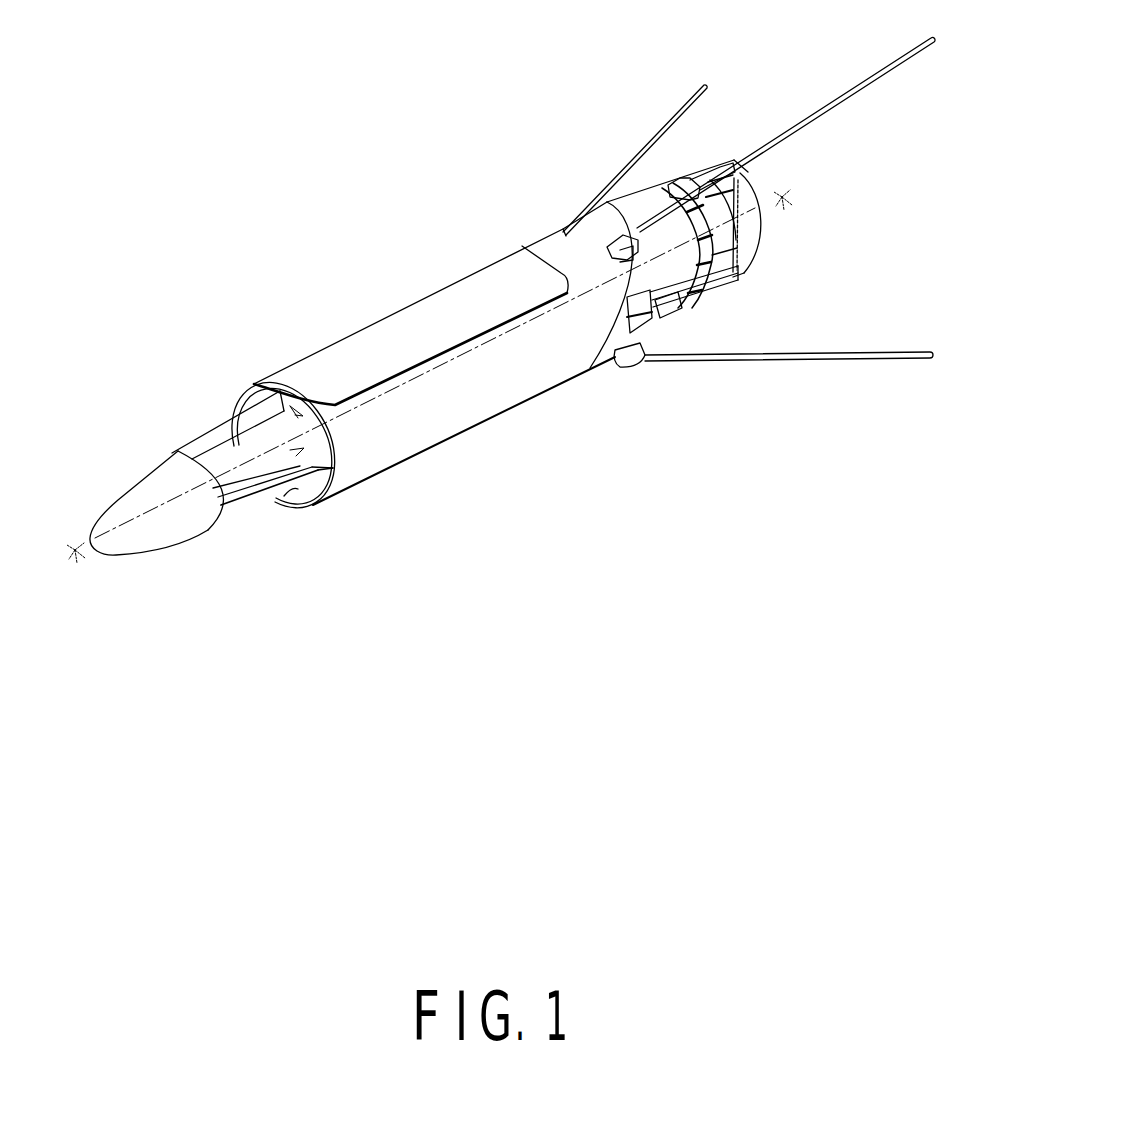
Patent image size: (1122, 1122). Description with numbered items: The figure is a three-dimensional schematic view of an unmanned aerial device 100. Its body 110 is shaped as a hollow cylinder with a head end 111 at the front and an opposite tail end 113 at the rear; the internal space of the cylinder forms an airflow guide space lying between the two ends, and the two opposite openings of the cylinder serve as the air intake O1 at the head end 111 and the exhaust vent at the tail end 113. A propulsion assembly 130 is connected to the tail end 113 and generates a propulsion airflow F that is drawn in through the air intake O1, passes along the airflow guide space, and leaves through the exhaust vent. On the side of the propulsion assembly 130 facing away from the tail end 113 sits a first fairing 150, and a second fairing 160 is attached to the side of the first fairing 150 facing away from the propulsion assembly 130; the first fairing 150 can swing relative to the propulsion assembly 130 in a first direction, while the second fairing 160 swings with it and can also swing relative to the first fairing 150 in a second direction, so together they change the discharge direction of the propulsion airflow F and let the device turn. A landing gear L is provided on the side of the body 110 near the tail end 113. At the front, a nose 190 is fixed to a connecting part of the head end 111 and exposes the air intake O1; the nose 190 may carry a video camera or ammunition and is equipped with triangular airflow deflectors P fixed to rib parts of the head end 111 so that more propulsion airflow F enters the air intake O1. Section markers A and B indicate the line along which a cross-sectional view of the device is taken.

The unmanned aerial device 100 is at (147, 121).
The body 110 is at (468, 400).
The head end 111 is at (258, 383).
The tail end 113 is at (563, 230).
The propulsion assembly 130 is at (612, 228).
The first fairing 150 is at (713, 253).
The second fairing 160 is at (747, 243).
The nose 190 is at (153, 477).
The landing gear L is at (838, 100).
The propulsion airflow F is at (259, 500).
The airflow deflector P is at (331, 487).
The air intake O1 is at (298, 410).
The section line A- A is at (786, 201).
The direction B is at (782, 196).